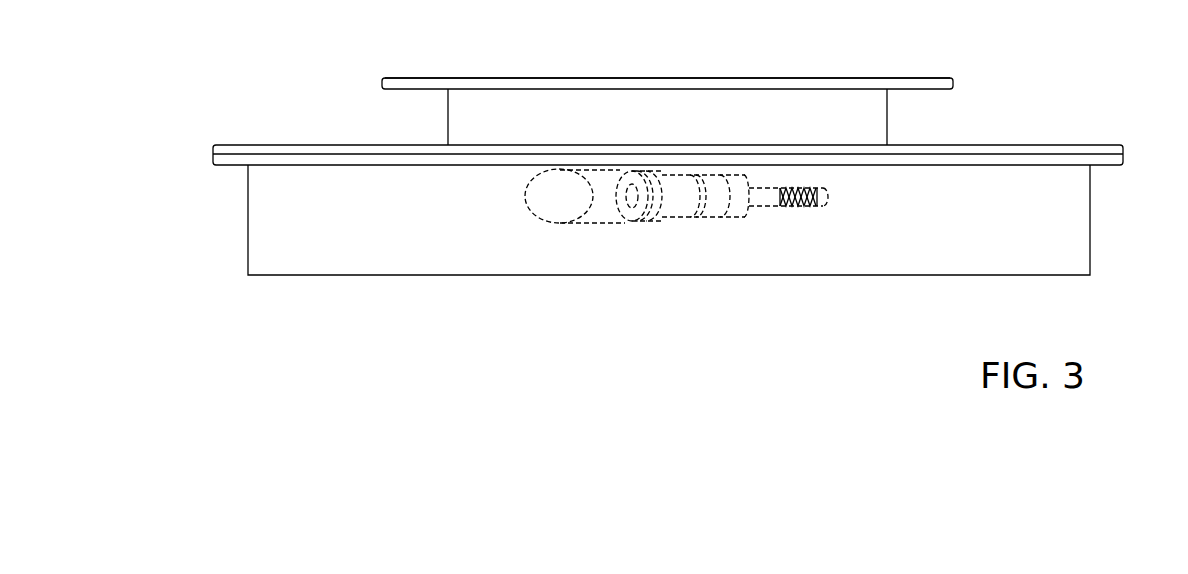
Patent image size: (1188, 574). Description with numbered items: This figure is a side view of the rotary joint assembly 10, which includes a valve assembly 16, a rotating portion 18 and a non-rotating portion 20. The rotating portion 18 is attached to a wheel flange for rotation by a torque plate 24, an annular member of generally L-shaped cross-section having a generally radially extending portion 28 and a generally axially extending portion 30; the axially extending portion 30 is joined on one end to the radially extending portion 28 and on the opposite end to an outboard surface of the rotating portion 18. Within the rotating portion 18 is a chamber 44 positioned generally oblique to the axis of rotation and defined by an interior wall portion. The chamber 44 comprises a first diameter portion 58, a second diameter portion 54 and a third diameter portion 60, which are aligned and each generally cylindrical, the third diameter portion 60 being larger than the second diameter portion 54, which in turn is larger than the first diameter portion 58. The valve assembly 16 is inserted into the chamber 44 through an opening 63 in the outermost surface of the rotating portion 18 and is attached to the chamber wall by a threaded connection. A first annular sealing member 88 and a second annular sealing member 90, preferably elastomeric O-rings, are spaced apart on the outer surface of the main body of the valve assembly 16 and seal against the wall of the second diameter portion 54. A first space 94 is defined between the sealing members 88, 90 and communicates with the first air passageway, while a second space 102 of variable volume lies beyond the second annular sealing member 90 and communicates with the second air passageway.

The rotary joint assembly 10 is at (231, 62).
The rotating portion 18 is at (385, 71).
The torque plate 24 is at (948, 78).
The radially extending portion 28 is at (917, 78).
The axially extending portion 30 is at (887, 117).
The non-rotating portion 20 is at (1085, 258).
The valve assembly 16 is at (693, 222).
The chamber 44 is at (602, 177).
The opening 63 is at (527, 207).
The third diameter portion 60 is at (595, 227).
The first annular sealing member 88 is at (645, 226).
The first space 94 is at (667, 221).
The second diameter portion 54 is at (725, 220).
The second annular sealing member 90 is at (702, 222).
The second space 102 is at (735, 220).
The first diameter portion 58 is at (812, 208).